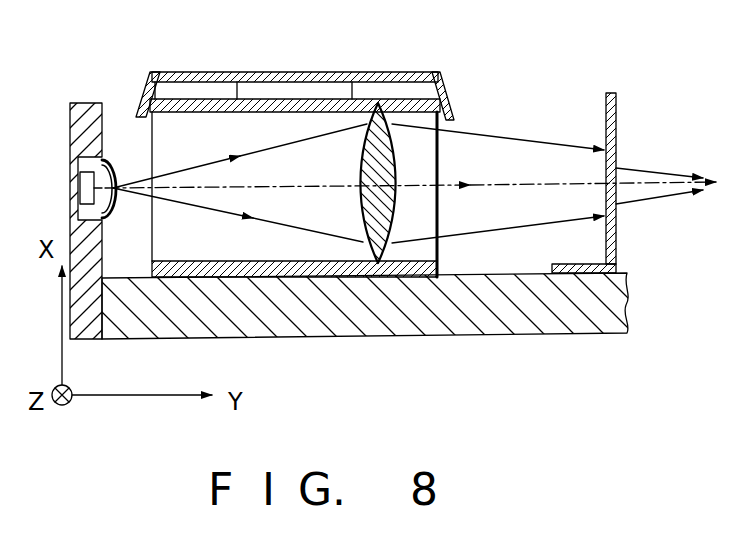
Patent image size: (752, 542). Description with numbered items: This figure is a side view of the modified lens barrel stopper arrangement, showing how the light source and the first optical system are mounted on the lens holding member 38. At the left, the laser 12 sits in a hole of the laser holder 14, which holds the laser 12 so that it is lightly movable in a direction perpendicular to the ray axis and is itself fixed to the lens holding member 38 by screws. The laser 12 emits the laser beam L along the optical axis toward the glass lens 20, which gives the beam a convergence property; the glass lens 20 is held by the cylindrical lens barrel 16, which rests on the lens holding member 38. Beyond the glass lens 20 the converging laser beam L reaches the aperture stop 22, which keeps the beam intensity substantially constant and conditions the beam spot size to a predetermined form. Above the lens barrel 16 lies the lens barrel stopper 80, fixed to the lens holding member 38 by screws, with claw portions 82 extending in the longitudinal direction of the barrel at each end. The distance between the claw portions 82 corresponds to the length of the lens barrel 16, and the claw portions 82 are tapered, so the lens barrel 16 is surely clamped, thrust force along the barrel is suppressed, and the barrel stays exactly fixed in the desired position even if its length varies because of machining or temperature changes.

The semiconductor laser element 12 is at (109, 157).
The laser holder 14 is at (82, 102).
The lens barrel 16 is at (443, 118).
The glass lens 20 is at (366, 228).
The aperture stop 22 is at (620, 116).
The lens holding member 38 is at (414, 327).
The lens barrel stopper 80 is at (278, 72).
The claw portions 82 is at (146, 102).
The laser beam L is at (536, 183).